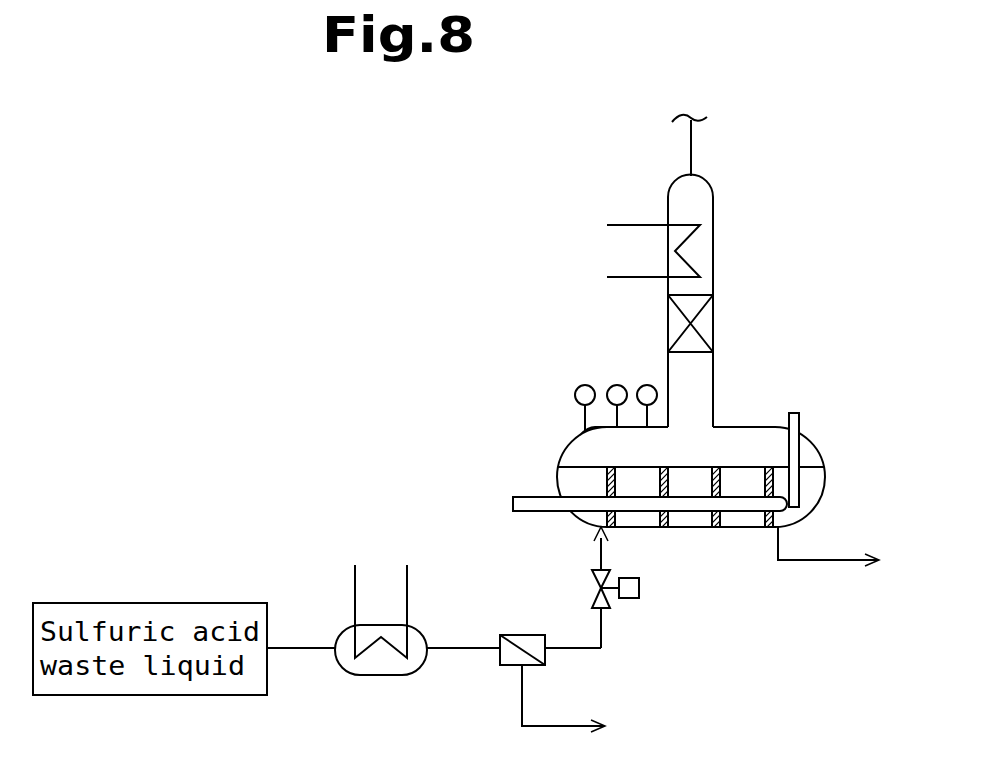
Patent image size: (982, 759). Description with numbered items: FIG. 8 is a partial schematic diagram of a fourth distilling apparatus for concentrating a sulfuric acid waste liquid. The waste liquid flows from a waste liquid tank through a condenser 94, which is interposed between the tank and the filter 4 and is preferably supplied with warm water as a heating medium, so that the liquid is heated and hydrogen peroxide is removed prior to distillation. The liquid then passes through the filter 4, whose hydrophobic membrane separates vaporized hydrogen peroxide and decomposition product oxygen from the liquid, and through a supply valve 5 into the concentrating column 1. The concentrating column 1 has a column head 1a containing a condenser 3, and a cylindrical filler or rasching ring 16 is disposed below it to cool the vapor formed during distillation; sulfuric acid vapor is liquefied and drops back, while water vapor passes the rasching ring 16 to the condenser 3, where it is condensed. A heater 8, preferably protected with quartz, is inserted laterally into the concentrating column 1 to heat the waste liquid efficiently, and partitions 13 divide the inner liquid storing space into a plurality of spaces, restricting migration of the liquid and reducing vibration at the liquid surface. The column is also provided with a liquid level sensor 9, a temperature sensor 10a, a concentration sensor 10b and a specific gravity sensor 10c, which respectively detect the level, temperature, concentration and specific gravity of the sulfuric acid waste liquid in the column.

The concentrating column 1 is at (815, 440).
The column head 1a is at (713, 196).
The condenser 3 is at (705, 240).
The filter 4 is at (522, 633).
The supply valve 5 is at (631, 598).
The heater 8 is at (524, 494).
The liquid level sensor 9 is at (800, 415).
The temperature sensor 10a is at (575, 394).
The concentration sensor 10b is at (612, 381).
The specific gravity sensor 10c is at (646, 383).
The partitions 13 is at (769, 528).
The cylindrical filler (rasching ring) 16 is at (713, 315).
The condenser 94 is at (381, 676).